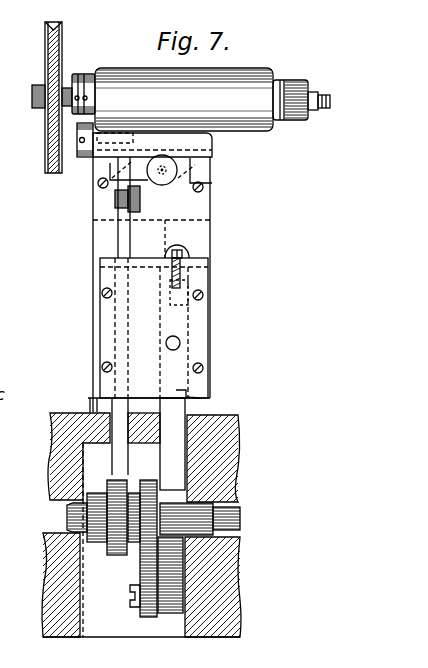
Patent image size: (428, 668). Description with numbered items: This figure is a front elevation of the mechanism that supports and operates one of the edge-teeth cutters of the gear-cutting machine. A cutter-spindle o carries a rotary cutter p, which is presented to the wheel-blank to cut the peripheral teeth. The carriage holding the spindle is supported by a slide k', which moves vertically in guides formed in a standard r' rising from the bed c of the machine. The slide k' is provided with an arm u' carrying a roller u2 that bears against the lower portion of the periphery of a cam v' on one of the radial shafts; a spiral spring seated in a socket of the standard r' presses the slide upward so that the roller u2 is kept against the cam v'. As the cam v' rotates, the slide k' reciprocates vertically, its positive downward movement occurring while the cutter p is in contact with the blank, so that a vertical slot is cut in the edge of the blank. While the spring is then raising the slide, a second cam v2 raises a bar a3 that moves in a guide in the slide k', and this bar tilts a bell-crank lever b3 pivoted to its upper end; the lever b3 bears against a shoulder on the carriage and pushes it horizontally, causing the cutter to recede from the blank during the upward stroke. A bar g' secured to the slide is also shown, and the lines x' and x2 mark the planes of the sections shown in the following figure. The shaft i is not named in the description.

The cutter-spindle o is at (292, 82).
The rotary cutter p is at (318, 92).
The bar g' is at (156, 161).
The bell-crank lever b3 is at (141, 191).
The bar a3 is at (123, 237).
The section line x2 is at (112, 413).
The slide k' is at (182, 227).
The standard r' is at (202, 400).
The section line x' is at (81, 524).
The bed c is at (227, 477).
The arm u' is at (172, 444).
The shaft i is at (153, 519).
The cam v2 is at (107, 517).
The cam v' is at (135, 517).
The roller u2 is at (160, 614).